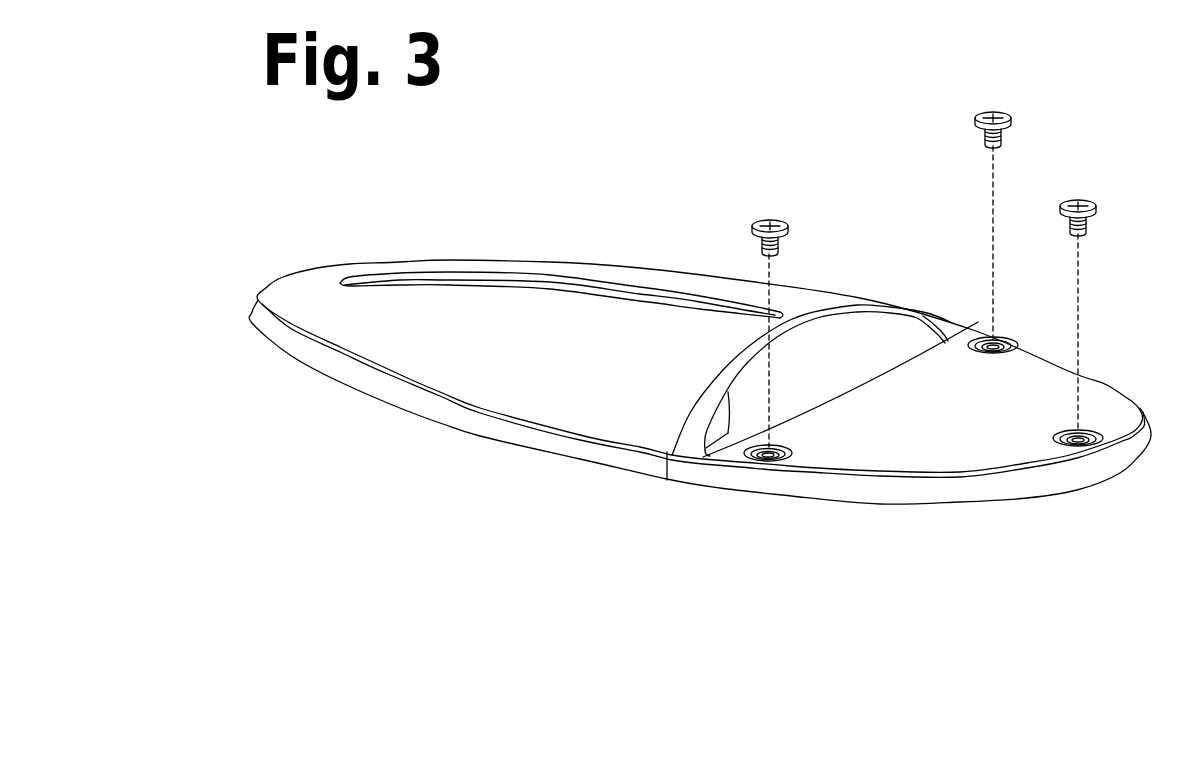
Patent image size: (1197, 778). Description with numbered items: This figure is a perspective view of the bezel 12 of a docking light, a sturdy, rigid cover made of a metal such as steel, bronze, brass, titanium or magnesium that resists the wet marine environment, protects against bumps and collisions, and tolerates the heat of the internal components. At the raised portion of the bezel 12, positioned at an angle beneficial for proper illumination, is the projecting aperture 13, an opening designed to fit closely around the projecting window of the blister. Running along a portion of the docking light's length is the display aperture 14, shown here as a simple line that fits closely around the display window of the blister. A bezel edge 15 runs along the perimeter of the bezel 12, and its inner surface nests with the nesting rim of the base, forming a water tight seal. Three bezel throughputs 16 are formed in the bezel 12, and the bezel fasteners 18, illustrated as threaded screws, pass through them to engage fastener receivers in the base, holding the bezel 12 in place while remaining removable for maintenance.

The bezel 12 is at (612, 517).
The projecting aperture 13 is at (890, 342).
The display aperture 14 is at (545, 289).
The bezel edge 15 is at (440, 426).
The bezel throughputs 16 is at (1000, 335).
The bezel fasteners 18 is at (760, 222).